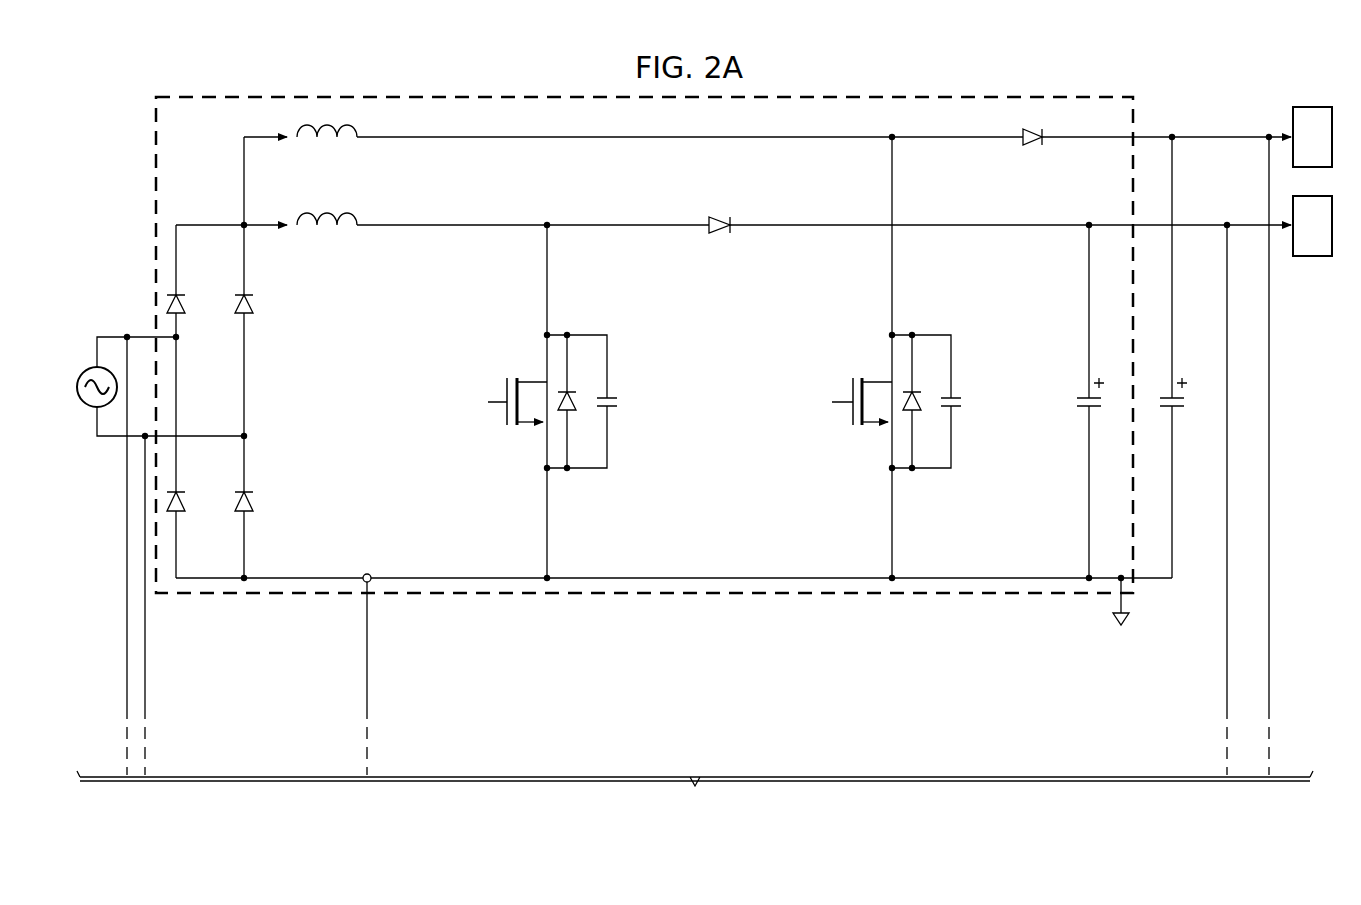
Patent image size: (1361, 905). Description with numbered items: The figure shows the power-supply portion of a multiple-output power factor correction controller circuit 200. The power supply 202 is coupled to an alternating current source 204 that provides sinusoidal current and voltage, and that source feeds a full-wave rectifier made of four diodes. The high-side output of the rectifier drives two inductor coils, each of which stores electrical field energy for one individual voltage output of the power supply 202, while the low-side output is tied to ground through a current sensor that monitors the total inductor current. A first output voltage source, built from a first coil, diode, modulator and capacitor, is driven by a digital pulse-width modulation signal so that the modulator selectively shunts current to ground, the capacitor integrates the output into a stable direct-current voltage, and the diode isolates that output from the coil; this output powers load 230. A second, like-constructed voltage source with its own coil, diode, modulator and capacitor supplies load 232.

The PFC controller circuit 200 is at (138, 126).
The power supply 202 is at (261, 96).
The alternating current source 204 is at (77, 402).
The load 230 is at (1313, 107).
The load 232 is at (1313, 256).